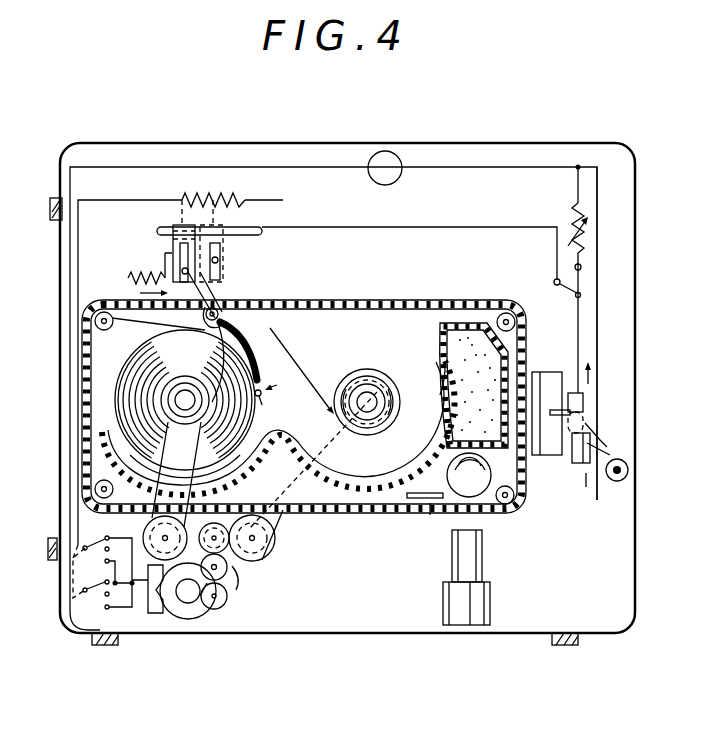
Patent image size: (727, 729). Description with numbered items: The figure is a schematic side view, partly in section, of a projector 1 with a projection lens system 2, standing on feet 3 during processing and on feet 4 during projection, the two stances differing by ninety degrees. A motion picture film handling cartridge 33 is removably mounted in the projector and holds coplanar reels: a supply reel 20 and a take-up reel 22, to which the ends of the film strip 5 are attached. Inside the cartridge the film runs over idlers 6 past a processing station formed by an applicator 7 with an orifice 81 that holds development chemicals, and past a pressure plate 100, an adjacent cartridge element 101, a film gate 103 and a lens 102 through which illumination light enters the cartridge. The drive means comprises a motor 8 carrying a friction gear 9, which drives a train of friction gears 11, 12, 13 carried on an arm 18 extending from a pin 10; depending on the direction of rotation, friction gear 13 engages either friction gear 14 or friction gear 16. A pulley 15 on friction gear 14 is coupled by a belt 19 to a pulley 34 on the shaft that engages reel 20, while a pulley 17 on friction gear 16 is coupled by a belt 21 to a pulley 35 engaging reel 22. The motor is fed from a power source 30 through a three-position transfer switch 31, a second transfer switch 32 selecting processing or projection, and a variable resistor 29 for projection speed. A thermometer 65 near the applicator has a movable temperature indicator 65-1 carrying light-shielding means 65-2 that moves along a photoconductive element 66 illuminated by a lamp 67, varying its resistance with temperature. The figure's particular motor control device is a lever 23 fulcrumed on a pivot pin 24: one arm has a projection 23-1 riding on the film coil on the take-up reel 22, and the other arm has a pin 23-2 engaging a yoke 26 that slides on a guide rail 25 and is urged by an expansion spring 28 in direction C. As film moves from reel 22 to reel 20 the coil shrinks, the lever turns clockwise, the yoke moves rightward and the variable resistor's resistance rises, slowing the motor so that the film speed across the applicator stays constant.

The projector 1 is at (607, 563).
The projection lens system 2 is at (490, 603).
The feet 3 is at (110, 641).
The feet 4 is at (55, 198).
The film strip 5 is at (302, 370).
The idlers 6 is at (103, 305).
The applicator 7 is at (467, 355).
The motor 8 is at (160, 592).
The friction gear 9 is at (185, 603).
The pin 10 is at (214, 609).
The friction gear 11 is at (202, 600).
The friction gear 12 is at (235, 568).
The friction gear 13 is at (230, 545).
The friction gear 14 is at (263, 557).
The pulley 15 is at (267, 538).
The friction gear 16 is at (163, 520).
The pulley 17 is at (150, 539).
The arm 18 is at (228, 580).
The belt 19 is at (287, 523).
The supply reel 20 is at (377, 387).
The belt 21 is at (115, 413).
The take-up reel 22 is at (180, 383).
The lever 23 is at (250, 341).
The projection 23-1 is at (262, 398).
The pin 23-2 is at (190, 272).
The pivot pin 24 is at (226, 318).
The guide rail 25 is at (252, 230).
The yoke 26 is at (173, 246).
The expansion spring 28 is at (130, 272).
The variable resistor 29 is at (572, 227).
The power source 30 is at (385, 151).
The transfer switch 31 is at (72, 575).
The transfer switch 32 is at (588, 275).
The motion picture film handling cartridge 33 is at (369, 300).
The pulley 34 is at (362, 382).
The pulley 35 is at (170, 390).
The thermometer 65 is at (540, 380).
The temperature indicator 65-1 is at (553, 410).
The light-shielding means 65-2 is at (582, 405).
The photoconductive element 66 is at (576, 446).
The lamp 67 is at (628, 460).
The orifice 81 is at (457, 423).
The pressure plate 100 is at (418, 500).
The guide 101 is at (433, 513).
The lens 102 is at (478, 500).
The film gate 103 is at (470, 512).